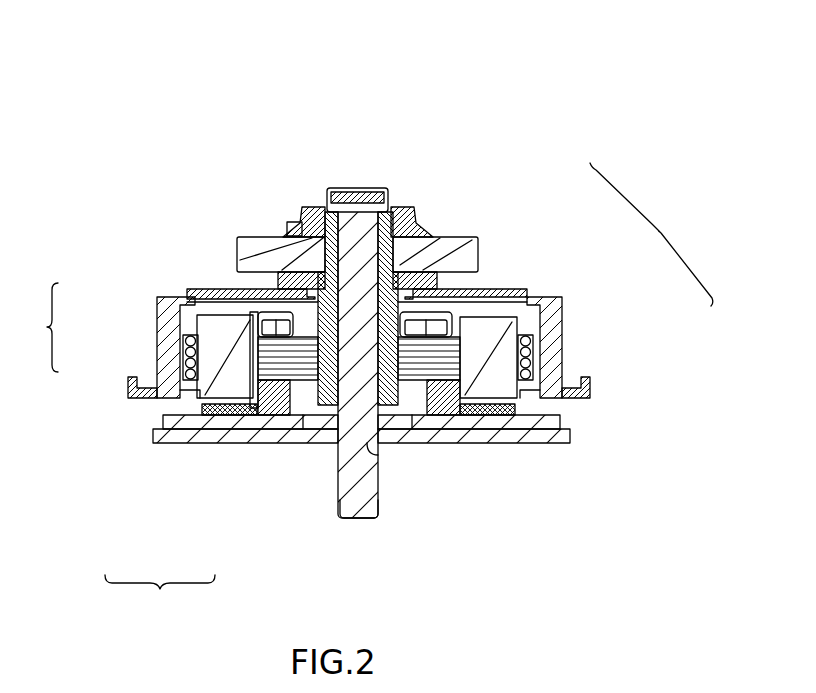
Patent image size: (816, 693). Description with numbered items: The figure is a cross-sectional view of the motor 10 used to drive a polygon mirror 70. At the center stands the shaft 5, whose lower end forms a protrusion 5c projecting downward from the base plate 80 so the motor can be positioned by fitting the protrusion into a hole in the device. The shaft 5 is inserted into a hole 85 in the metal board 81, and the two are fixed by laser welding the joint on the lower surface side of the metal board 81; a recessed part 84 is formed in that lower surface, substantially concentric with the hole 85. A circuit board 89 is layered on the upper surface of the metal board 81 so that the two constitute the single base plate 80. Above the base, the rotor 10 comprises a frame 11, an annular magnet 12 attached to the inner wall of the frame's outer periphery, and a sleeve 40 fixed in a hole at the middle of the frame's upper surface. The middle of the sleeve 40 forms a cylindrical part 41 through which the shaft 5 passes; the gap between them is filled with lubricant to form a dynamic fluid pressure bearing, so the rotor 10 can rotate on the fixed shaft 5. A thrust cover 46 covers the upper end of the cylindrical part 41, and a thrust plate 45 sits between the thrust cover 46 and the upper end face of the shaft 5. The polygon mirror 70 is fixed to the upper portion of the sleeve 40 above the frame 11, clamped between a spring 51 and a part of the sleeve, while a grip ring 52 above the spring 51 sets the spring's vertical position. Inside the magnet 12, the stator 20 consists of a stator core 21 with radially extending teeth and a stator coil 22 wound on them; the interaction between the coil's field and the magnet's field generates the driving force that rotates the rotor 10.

The shaft 5 is at (365, 407).
The protrusion 5c is at (380, 490).
The rotor 10 is at (651, 234).
The frame 11 is at (567, 298).
The magnet 12 is at (563, 340).
The stator 20 is at (34, 327).
The stator core 21 is at (255, 370).
The stator coil 22 is at (225, 340).
The sleeve 40 is at (480, 240).
The cylindrical part 41 is at (398, 193).
The thrust plate 45 is at (340, 188).
The thrust cover 46 is at (375, 188).
The spring 51 is at (293, 222).
The grip ring 52 is at (305, 193).
The polygon mirror 70 is at (240, 260).
The base plate 80 is at (160, 602).
The metal board 81 is at (178, 445).
The recessed part 84 is at (382, 441).
The hole 85 is at (380, 452).
The circuit board 89 is at (210, 445).